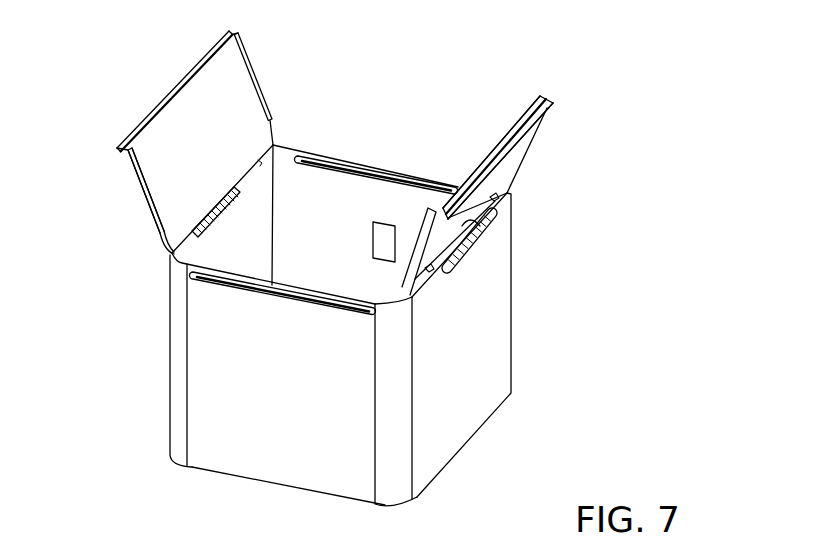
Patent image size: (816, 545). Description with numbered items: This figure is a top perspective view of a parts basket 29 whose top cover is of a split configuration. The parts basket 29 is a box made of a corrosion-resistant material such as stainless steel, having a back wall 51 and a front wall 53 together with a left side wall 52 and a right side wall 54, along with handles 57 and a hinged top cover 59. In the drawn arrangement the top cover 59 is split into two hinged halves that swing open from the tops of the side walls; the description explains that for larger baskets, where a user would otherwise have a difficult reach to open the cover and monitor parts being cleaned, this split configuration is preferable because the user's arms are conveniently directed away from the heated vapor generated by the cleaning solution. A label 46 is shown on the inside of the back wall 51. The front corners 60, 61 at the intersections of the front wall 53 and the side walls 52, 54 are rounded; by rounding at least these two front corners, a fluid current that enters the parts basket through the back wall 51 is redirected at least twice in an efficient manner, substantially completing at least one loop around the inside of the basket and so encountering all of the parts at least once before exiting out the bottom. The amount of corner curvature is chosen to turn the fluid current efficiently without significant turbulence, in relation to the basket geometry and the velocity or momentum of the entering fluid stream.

The parts basket 29 is at (468, 116).
The label tag 46 is at (385, 234).
The back wall 51 is at (332, 220).
The left side wall 52 is at (249, 220).
The front wall 53 is at (299, 403).
The right side wall 54 is at (485, 377).
The handle 57 is at (478, 238).
The hinged top cover 59 is at (137, 202).
The front corner 60 is at (178, 404).
The front corner 61 is at (396, 449).